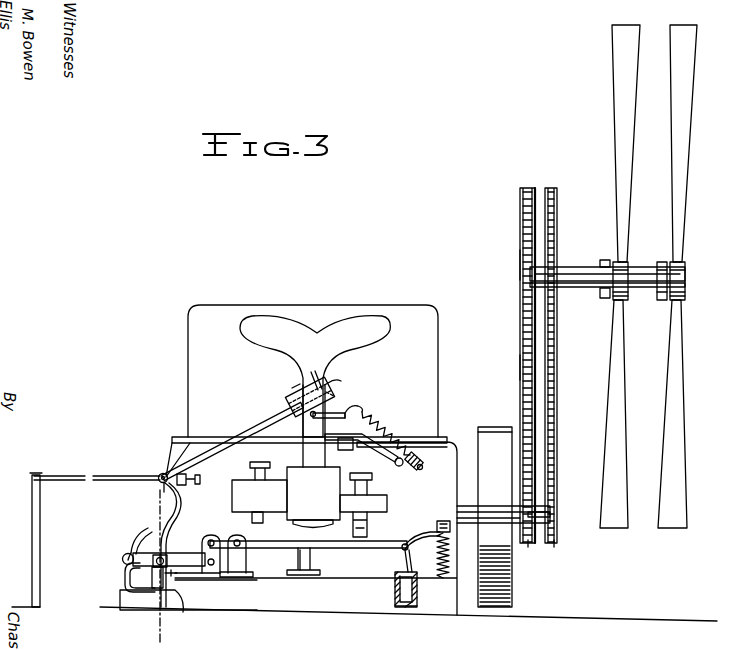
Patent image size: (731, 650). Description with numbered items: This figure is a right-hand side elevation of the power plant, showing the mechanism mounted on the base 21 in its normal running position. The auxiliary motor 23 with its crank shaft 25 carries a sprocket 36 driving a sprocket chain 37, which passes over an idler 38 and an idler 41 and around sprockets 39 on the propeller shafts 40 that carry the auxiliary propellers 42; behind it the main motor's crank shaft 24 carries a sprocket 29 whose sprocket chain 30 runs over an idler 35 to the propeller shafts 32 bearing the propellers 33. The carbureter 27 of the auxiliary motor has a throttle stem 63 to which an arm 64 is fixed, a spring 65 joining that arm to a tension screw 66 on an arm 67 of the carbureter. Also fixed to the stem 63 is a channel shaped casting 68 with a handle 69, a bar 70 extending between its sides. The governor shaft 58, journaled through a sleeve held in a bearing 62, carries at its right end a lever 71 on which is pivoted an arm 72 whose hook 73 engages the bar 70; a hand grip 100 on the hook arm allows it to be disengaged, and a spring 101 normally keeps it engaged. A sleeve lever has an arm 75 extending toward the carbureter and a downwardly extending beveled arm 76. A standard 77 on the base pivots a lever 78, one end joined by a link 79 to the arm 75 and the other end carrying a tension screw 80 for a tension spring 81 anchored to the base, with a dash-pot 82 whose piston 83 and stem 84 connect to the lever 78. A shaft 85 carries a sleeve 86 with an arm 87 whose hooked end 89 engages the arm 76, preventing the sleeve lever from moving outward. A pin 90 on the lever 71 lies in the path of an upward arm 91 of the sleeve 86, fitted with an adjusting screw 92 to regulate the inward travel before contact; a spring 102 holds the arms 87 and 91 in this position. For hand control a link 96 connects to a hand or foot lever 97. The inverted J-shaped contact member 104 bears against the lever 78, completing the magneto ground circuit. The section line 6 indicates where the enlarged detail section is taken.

The section line 6— 6 is at (156, 570).
The base 21 is at (449, 612).
The auxiliary motor 23 is at (200, 315).
The crank shaft 24 is at (550, 515).
The crank shaft 25 is at (531, 545).
The carbureter 27 is at (309, 499).
The sprocket 29 is at (553, 545).
The sprocket chain 30 is at (556, 298).
The propeller shafts 32 is at (686, 281).
The propellers 33 is at (686, 80).
The idler 35 is at (558, 192).
The sprocket 36 is at (513, 545).
The sprocket chain 37 is at (520, 368).
The idler 38 is at (520, 424).
The sprockets 39 is at (519, 265).
The propeller shafts 40 is at (630, 275).
The idler 41 is at (521, 195).
The auxiliary propellers 42 is at (614, 70).
The shaft 58 is at (168, 557).
The bearing 62 is at (178, 574).
The throttle stem 63 is at (324, 426).
The arm 64 is at (361, 410).
The spring 65 is at (393, 437).
The tension screw 66 is at (413, 467).
The arm 67 is at (375, 463).
The channel shaped casting 68 is at (290, 385).
The handle 69 is at (317, 371).
The bar 70 is at (298, 391).
The lever 71 is at (160, 487).
The arm 72 is at (266, 421).
The hook 73 is at (335, 394).
The arm 75 is at (199, 553).
The arm 76 is at (155, 582).
The standard 77 is at (238, 570).
The lever 78 is at (271, 549).
The link 79 is at (221, 543).
The tension screw 80 is at (442, 521).
The tension spring 81 is at (437, 553).
The dash-pot 82 is at (399, 606).
The piston 83 is at (397, 590).
The stem 84 is at (404, 561).
The shaft 85 is at (125, 550).
The sleeve 86 is at (122, 559).
The arm 87 is at (125, 585).
The hooked end 89 is at (182, 600).
The pin 90 is at (160, 474).
The arm 91 is at (179, 501).
The adjusting screw 92 is at (200, 481).
The link 96 is at (75, 475).
The hand or foot lever 97 is at (31, 476).
The hand grip 100 is at (336, 382).
The springs 101 is at (175, 452).
The spring 102 is at (140, 538).
The contact member 104 is at (297, 556).